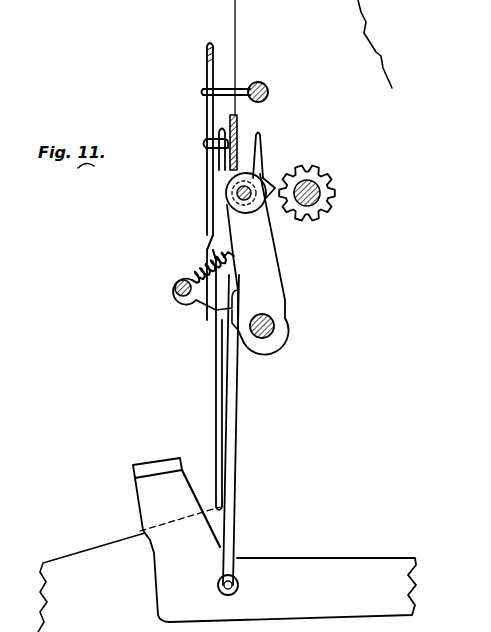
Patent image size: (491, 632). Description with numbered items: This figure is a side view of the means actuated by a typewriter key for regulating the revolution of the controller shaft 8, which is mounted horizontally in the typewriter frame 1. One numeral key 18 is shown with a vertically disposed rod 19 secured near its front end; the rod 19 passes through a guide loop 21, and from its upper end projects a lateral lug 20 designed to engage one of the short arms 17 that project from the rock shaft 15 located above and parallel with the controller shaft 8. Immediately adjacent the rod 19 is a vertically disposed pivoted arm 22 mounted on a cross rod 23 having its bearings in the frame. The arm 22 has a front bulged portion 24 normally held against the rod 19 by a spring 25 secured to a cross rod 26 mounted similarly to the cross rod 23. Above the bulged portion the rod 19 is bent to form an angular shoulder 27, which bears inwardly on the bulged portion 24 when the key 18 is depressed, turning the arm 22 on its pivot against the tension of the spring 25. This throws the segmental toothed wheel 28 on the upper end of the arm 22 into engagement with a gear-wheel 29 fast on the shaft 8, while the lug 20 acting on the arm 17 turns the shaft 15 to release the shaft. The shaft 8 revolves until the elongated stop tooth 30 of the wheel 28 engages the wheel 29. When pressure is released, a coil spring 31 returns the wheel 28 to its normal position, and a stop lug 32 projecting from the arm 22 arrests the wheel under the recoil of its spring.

The frame 1 is at (313, 57).
The controller shaft 8 is at (322, 182).
The rock shaft 15 is at (270, 93).
The short arms 17 is at (242, 88).
The numeral key 18 is at (138, 467).
The vertically disposed rod 19 is at (235, 538).
The lateral lug 20 is at (206, 70).
The guide loop 21 is at (203, 145).
The pivoted arm 22 is at (274, 271).
The cross rod 23 is at (275, 322).
The front bulged portion 24 is at (214, 238).
The spring 25 is at (192, 305).
The cross rod 26 is at (168, 300).
The angular shoulder 27 is at (208, 249).
The segmental toothed wheel 28 is at (272, 176).
The gear-wheel 29 is at (308, 216).
The stop tooth 30 is at (248, 144).
The coil spring 31 is at (226, 186).
The stop lug 32 is at (232, 199).